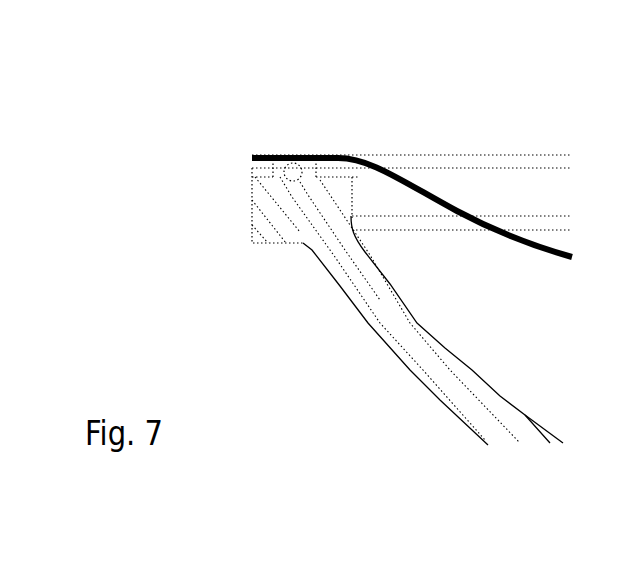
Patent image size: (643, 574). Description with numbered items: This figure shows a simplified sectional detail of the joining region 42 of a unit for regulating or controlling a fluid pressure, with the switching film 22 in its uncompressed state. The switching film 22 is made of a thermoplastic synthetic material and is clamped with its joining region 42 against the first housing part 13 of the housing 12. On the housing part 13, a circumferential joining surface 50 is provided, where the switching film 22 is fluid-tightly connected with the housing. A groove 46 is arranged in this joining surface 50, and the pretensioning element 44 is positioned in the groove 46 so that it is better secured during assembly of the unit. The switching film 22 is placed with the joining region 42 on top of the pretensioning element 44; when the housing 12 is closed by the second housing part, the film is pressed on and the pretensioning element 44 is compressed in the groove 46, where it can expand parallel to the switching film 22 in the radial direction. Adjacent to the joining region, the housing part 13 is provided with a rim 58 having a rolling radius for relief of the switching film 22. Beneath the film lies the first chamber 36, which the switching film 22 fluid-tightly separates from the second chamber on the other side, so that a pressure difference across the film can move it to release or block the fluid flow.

The housing 12 is at (369, 311).
The first housing part 13 is at (378, 333).
The switching film 22 is at (478, 222).
The first chamber 36 is at (515, 327).
The joining region 42 is at (292, 150).
The pretensioning element 44 is at (293, 181).
The groove 46 is at (280, 176).
The joining surface 50 is at (311, 180).
The rim 58 is at (343, 173).